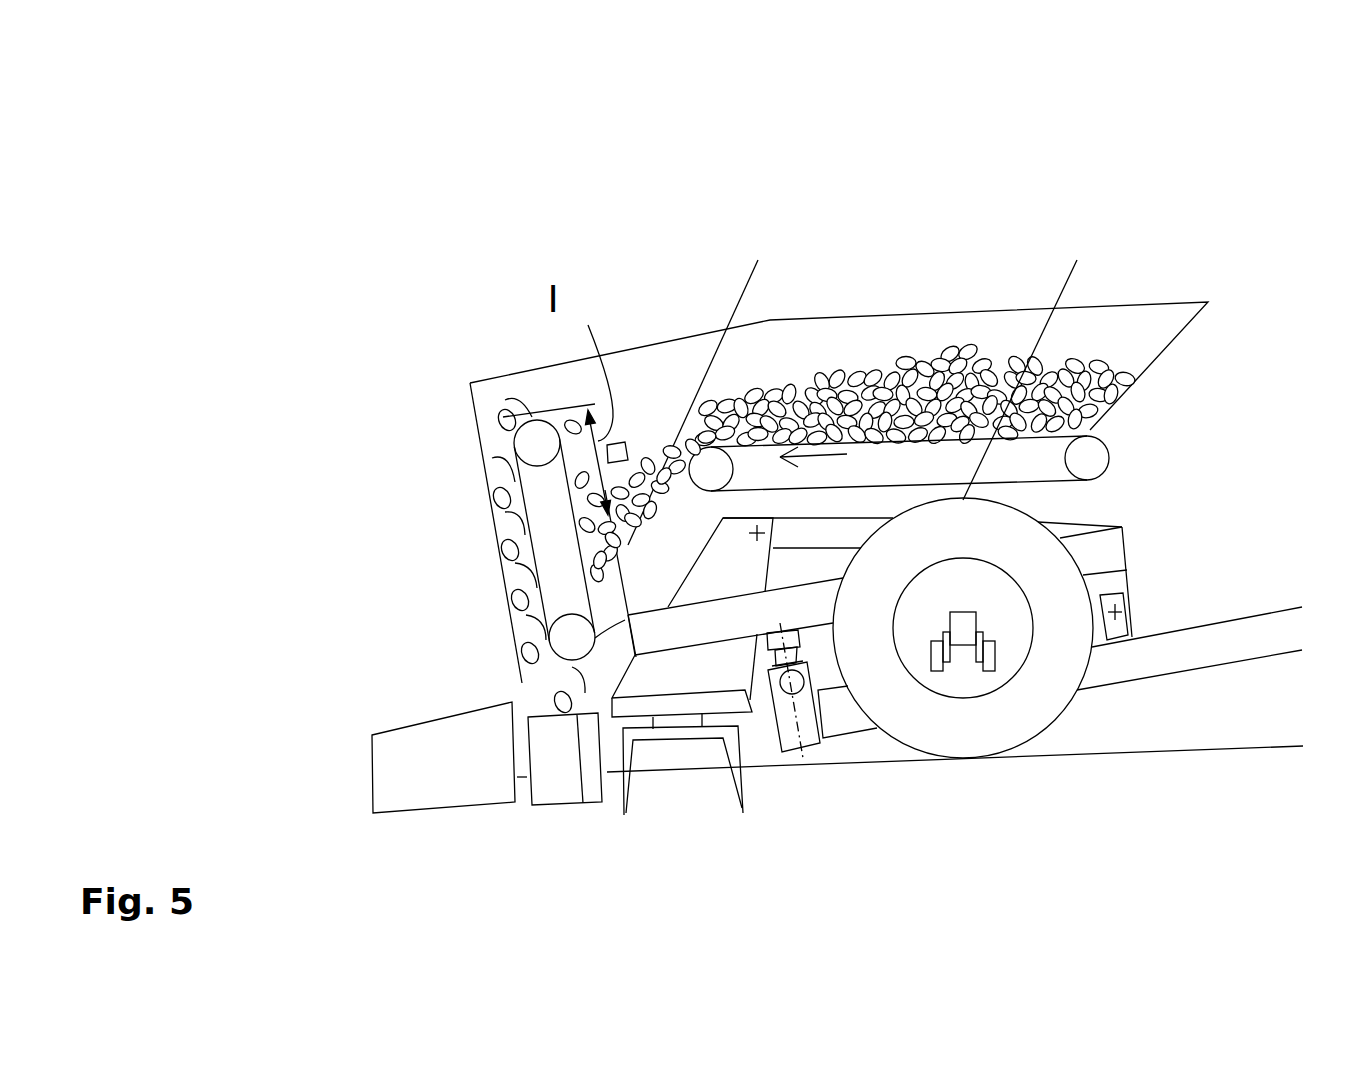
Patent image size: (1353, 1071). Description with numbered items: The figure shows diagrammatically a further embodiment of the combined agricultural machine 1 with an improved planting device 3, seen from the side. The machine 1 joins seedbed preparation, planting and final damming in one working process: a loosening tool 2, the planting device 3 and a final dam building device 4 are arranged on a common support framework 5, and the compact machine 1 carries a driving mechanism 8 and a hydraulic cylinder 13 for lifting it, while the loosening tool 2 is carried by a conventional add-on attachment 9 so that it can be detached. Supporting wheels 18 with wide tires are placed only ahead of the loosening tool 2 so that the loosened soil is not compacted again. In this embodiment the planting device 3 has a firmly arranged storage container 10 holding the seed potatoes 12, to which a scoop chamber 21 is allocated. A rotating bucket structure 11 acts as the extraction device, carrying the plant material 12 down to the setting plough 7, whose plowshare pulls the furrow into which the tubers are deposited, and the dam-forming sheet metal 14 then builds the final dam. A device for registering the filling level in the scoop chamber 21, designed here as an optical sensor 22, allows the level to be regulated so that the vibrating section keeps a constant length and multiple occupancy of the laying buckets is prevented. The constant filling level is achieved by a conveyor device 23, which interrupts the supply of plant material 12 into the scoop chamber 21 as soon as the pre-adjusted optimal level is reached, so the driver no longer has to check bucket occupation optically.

The combined agricultural machine 1 is at (1009, 286).
The loosening tool 2 is at (735, 758).
The planting device 3 is at (458, 418).
The final dam building device 4 is at (398, 708).
The support framework 5 is at (1170, 650).
The setting plough 7 is at (563, 772).
The driving mechanism 8 is at (1062, 510).
The add-on attachment 9 is at (728, 570).
The storage container 10 is at (793, 350).
The rotating bucket structure 11 is at (507, 483).
The seed potatoes 12 is at (1058, 362).
The hydraulic cylinder 13 is at (810, 730).
The dam-forming sheet metal 14 is at (433, 737).
The wheels 18 is at (983, 730).
The scoop chamber 21 is at (668, 400).
The optical sensor 22 is at (620, 443).
The conveyor device 23 is at (880, 470).